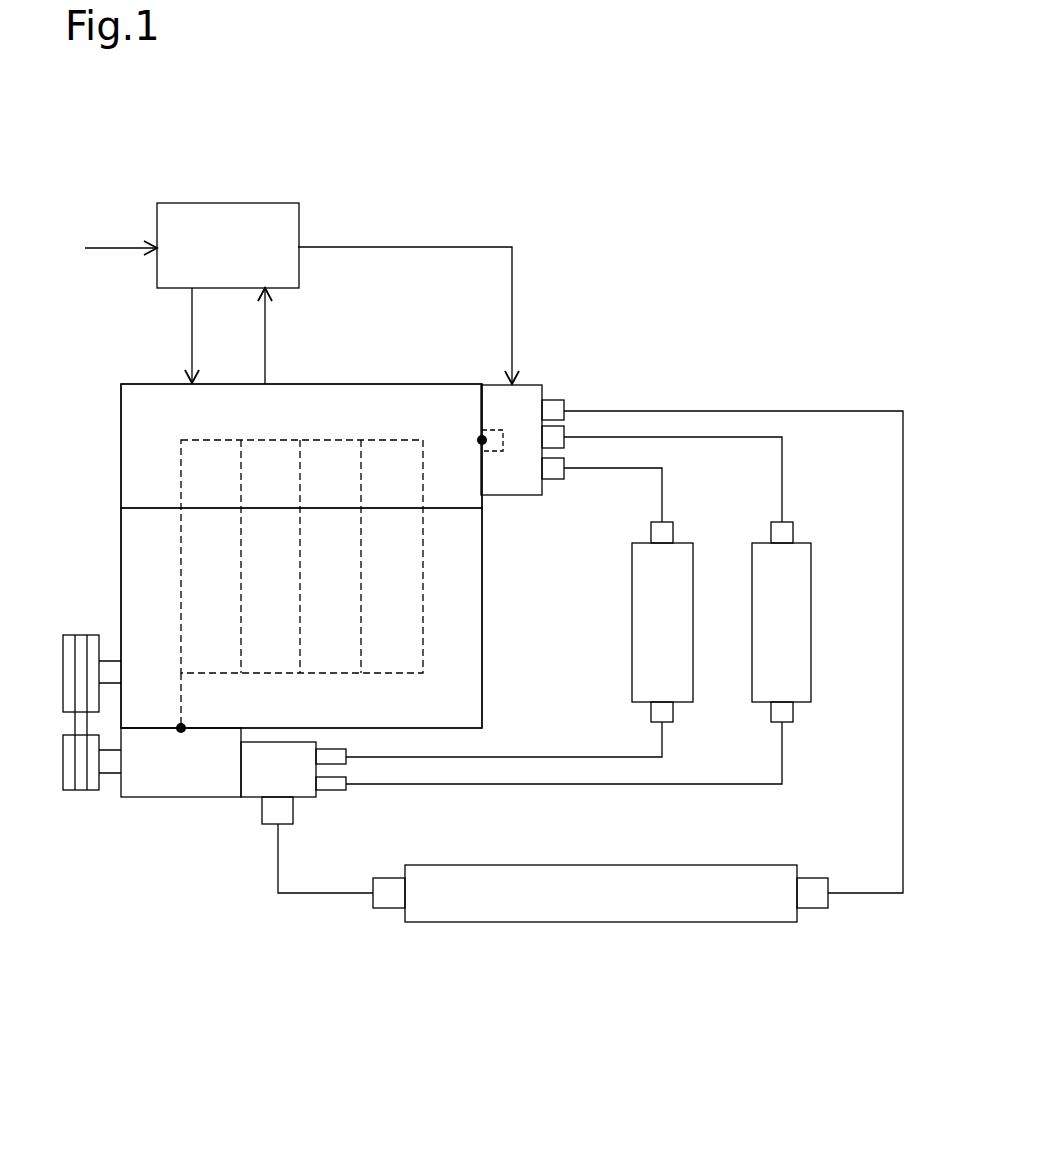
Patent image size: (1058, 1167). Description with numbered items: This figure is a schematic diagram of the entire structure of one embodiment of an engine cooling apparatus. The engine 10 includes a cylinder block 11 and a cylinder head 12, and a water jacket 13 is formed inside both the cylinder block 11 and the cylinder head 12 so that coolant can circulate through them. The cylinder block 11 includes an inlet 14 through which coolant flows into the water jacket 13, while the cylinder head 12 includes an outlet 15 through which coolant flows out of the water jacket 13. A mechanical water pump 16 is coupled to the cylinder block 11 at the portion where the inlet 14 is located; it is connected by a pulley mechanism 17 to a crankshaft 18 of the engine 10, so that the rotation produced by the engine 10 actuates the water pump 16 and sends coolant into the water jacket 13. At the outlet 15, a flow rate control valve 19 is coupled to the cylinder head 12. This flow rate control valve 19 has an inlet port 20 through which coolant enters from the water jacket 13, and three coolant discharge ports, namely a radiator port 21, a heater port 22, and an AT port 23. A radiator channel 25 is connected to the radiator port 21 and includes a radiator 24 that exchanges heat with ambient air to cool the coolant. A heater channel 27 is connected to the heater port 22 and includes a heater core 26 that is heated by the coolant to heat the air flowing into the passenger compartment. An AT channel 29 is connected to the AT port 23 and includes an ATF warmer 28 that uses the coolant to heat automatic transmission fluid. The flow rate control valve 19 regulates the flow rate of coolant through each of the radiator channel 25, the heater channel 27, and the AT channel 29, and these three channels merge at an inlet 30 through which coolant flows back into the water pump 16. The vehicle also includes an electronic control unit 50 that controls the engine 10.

The engine 10 is at (77, 421).
The cylinder block 11 is at (120, 566).
The cylinder head 12 is at (120, 455).
The water jacket 13 is at (423, 563).
The inlet 14 is at (178, 726).
The outlet 15 is at (478, 440).
The mechanical water pump 16 is at (170, 798).
The pulley mechanism 17 is at (80, 792).
The crankshaft 18 is at (110, 660).
The flow rate control valve 19 is at (510, 496).
The inlet port 20 is at (490, 430).
The radiator port 21 is at (550, 400).
The heater port 22 is at (556, 449).
The AT port 23 is at (551, 480).
The radiator 24 is at (590, 865).
The radiator channel 25 is at (904, 485).
The heater core 26 is at (812, 618).
The heater channel 27 is at (783, 485).
The ATF warmer 28 is at (632, 616).
The AT channel 29 is at (663, 497).
The inlet 30 is at (270, 742).
The electronic control unit 50 is at (300, 226).